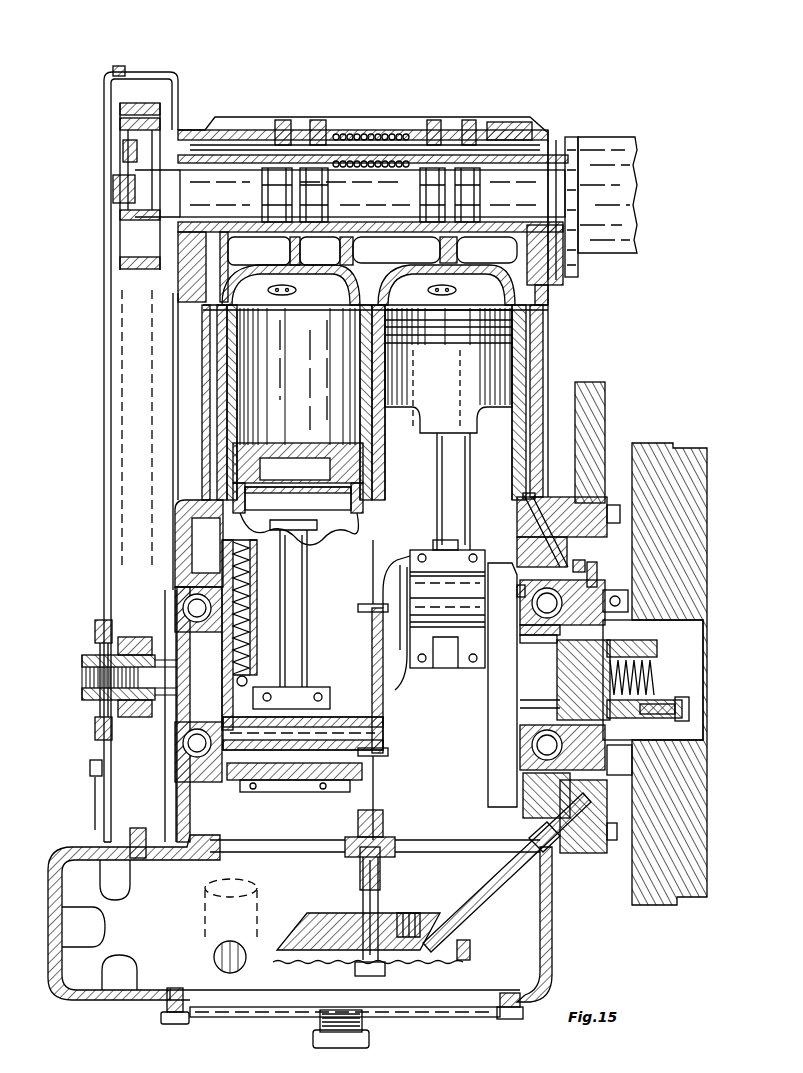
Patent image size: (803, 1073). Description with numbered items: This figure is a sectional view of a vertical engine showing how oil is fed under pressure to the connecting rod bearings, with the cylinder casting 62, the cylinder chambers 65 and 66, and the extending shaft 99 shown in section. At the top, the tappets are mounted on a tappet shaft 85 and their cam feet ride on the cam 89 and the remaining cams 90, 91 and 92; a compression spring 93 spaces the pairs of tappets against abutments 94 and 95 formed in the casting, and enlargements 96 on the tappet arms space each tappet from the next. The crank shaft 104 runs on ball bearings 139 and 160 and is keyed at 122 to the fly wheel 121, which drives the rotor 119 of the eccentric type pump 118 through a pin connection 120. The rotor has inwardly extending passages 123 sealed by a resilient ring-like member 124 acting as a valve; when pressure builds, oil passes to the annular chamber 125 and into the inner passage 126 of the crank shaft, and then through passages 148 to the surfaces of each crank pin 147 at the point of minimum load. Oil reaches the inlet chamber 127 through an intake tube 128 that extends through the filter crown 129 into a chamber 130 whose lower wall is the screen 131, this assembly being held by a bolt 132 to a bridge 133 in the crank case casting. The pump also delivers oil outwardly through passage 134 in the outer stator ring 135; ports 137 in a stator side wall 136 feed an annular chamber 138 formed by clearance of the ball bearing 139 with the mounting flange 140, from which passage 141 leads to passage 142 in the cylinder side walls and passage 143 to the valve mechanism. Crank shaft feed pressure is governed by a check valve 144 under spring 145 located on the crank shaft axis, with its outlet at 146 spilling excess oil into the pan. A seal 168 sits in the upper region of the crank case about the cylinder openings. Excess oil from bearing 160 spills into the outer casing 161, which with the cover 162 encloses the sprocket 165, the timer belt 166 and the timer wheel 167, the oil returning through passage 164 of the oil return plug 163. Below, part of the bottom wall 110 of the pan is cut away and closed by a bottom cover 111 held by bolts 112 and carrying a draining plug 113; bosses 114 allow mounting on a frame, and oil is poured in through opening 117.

The cover 162 is at (104, 72).
The outer casing 161 is at (147, 71).
The timer belt 166 is at (122, 378).
The timer wheel 167 is at (160, 110).
The abutment 95 is at (247, 140).
The tappet shaft 85 is at (395, 142).
The cam 92 is at (275, 222).
The cam 91 is at (314, 222).
The cam 90 is at (432, 222).
The cam 89 is at (468, 222).
The compression spring 93 is at (362, 133).
The enlargements 96 is at (316, 125).
The abutment 94 is at (496, 133).
The shaft 99 is at (600, 150).
The combustion chamber 65 is at (320, 278).
The combustion chamber 66 is at (415, 280).
The passage 143 is at (550, 295).
The cylinder block 62 is at (203, 296).
The passage 141 is at (525, 512).
The passage 142 is at (530, 464).
The seal 168 is at (222, 490).
The spring 145 is at (250, 598).
The check valve 144 is at (230, 677).
The valve outlet 146 is at (247, 676).
The passages 148 is at (298, 720).
The crank pin 147 is at (250, 782).
The ball bearing 160 is at (170, 602).
The sprocket 165 is at (140, 637).
The oil return plug 163 is at (158, 825).
The passage 164 is at (142, 858).
The crank shaft 104 is at (517, 688).
The mounting flange 140 is at (593, 382).
The fly wheel 121 is at (662, 443).
The ports 137 is at (550, 547).
The annular chamber 138 is at (563, 563).
The outer stator ring 135 is at (583, 566).
The passage 134 is at (605, 570).
The stator side wall 136 is at (615, 600).
The ball bearing 139 is at (518, 603).
The pin connection 120 is at (627, 600).
The inwardly extending passages 123 is at (522, 636).
The resilient ring-like member 124 is at (553, 637).
The annular chamber 125 is at (560, 677).
The inner passage 126 is at (560, 700).
The key 122 is at (660, 637).
The rotor 119 is at (620, 737).
The inlet chamber 127 is at (583, 790).
The pump 118 is at (590, 853).
The intake tube 128 is at (487, 882).
The bridge 133 is at (360, 853).
The bolt 132 is at (352, 970).
The chamber 130 is at (408, 920).
The filter crown 129 is at (470, 948).
The screen 131 is at (440, 965).
The opening 117 is at (214, 957).
The bottom wall 110 is at (128, 1001).
The bosses 114 is at (47, 970).
The bolts 112 is at (178, 1024).
The bottom cover 111 is at (248, 1017).
The draining plug 113 is at (340, 1048).